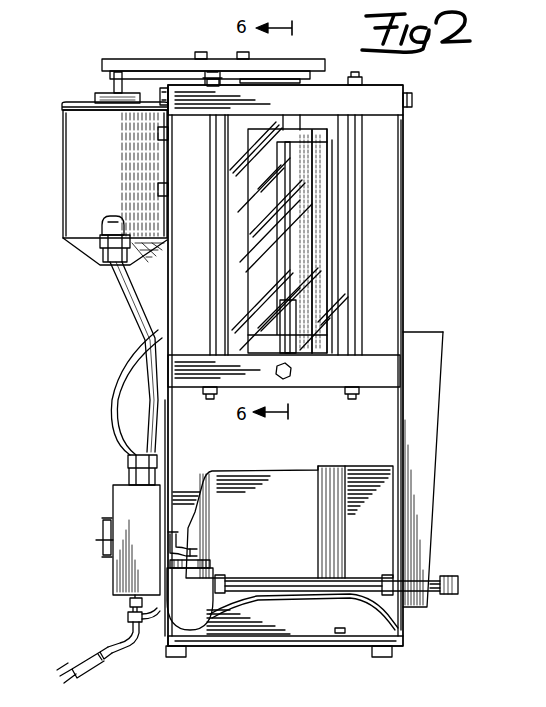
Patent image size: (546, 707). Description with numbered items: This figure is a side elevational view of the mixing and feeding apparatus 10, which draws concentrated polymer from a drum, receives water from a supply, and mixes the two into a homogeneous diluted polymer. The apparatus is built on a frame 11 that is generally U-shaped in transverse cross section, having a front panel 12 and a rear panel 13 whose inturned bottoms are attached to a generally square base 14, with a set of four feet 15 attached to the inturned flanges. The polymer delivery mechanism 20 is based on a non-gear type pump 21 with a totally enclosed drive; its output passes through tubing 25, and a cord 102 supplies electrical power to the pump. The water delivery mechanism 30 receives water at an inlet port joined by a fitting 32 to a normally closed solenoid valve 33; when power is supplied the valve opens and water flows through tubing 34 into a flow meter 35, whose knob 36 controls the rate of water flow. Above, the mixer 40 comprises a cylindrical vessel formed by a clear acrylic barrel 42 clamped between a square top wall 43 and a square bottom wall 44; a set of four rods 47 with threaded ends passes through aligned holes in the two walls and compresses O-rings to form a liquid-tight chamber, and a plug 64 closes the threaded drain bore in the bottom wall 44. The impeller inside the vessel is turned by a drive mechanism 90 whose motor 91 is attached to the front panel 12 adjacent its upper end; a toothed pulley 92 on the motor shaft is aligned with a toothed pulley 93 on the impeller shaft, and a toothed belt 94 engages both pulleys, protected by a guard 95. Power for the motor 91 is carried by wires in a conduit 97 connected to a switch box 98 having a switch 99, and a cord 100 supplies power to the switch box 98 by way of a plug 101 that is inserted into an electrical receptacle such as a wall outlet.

The mixing and feeding apparatus 10 is at (418, 145).
The frame 11 is at (399, 249).
The front panel 12 is at (170, 440).
The rear panel 13 is at (401, 300).
The base 14 is at (314, 646).
The feet 15 is at (175, 658).
The polymer delivery mechanism 20 is at (242, 471).
The pump 21 is at (296, 472).
The tubing 25 is at (120, 382).
The water delivery mechanism 30 is at (433, 498).
The fitting 32 is at (200, 538).
The solenoid valve 33 is at (200, 632).
The tubing 34 is at (242, 578).
The flow meter 35 is at (434, 425).
The knob 36 is at (453, 574).
The mixer 40 is at (369, 187).
The barrel 42 is at (353, 236).
The top wall 43 is at (378, 93).
The bottom wall 44 is at (376, 378).
The rods 47 is at (210, 278).
The plug 64 is at (293, 372).
The drive mechanism 90 is at (78, 257).
The motor 91 is at (66, 198).
The toothed pulley 92 is at (95, 88).
The toothed pulley 93 is at (310, 80).
The toothed belt 94 is at (112, 76).
The guard 95 is at (130, 59).
The conduit 97 is at (128, 302).
The switch box 98 is at (113, 505).
The switch 99 is at (100, 540).
The cord 100 is at (126, 638).
The plug 101 is at (78, 658).
The cord 102 is at (258, 620).